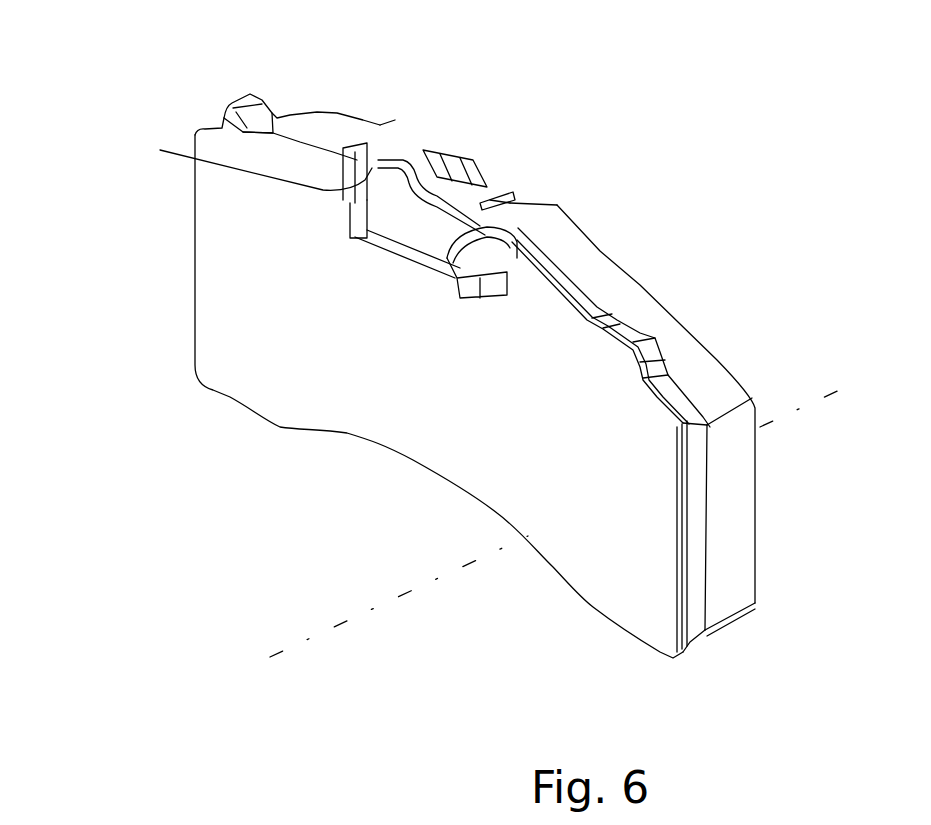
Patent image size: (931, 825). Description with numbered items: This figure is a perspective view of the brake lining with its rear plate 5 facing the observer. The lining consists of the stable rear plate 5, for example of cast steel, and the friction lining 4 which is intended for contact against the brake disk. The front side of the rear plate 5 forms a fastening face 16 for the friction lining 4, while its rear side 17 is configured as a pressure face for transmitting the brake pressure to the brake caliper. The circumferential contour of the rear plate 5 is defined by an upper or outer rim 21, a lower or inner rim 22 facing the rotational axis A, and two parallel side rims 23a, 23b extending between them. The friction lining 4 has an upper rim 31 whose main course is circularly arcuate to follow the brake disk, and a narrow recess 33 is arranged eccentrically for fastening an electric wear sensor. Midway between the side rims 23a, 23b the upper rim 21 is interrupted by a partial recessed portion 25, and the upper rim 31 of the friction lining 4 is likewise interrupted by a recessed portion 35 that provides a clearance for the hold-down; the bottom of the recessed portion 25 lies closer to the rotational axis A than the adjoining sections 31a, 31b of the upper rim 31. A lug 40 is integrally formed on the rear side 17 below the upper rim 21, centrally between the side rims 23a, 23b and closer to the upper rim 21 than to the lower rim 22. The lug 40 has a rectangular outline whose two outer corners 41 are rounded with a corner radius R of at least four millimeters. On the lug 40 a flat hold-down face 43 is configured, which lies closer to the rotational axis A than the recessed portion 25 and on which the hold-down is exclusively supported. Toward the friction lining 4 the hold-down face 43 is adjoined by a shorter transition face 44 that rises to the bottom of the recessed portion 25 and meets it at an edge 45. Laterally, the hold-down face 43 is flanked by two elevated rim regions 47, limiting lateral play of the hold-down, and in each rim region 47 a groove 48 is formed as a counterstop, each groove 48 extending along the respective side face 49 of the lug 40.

The friction lining 4 is at (730, 567).
The rear plate 5 is at (693, 623).
The fastening face 16 is at (707, 522).
The rear side 17 is at (597, 560).
The upper rim 21 is at (315, 134).
The lower rim 22 is at (496, 515).
The side rim 23a is at (193, 213).
The side rim 23b is at (695, 477).
The recessed portion 25 is at (478, 183).
The upper rim 31 is at (687, 348).
The section of upper rim 31a is at (555, 222).
The section of upper rim 31b is at (433, 167).
The narrow recess 33 is at (245, 166).
The recessed portion 35 is at (513, 212).
The lug 40 is at (428, 212).
The outer corners 41 is at (357, 234).
The hold-down face 43 is at (445, 262).
The transition face 44 is at (432, 217).
The edge 45 is at (440, 238).
The rim region 47 is at (410, 147).
The groove 48 is at (350, 213).
The side face 49 is at (487, 300).
The corner radius R is at (470, 298).
The rotational axis A is at (528, 534).